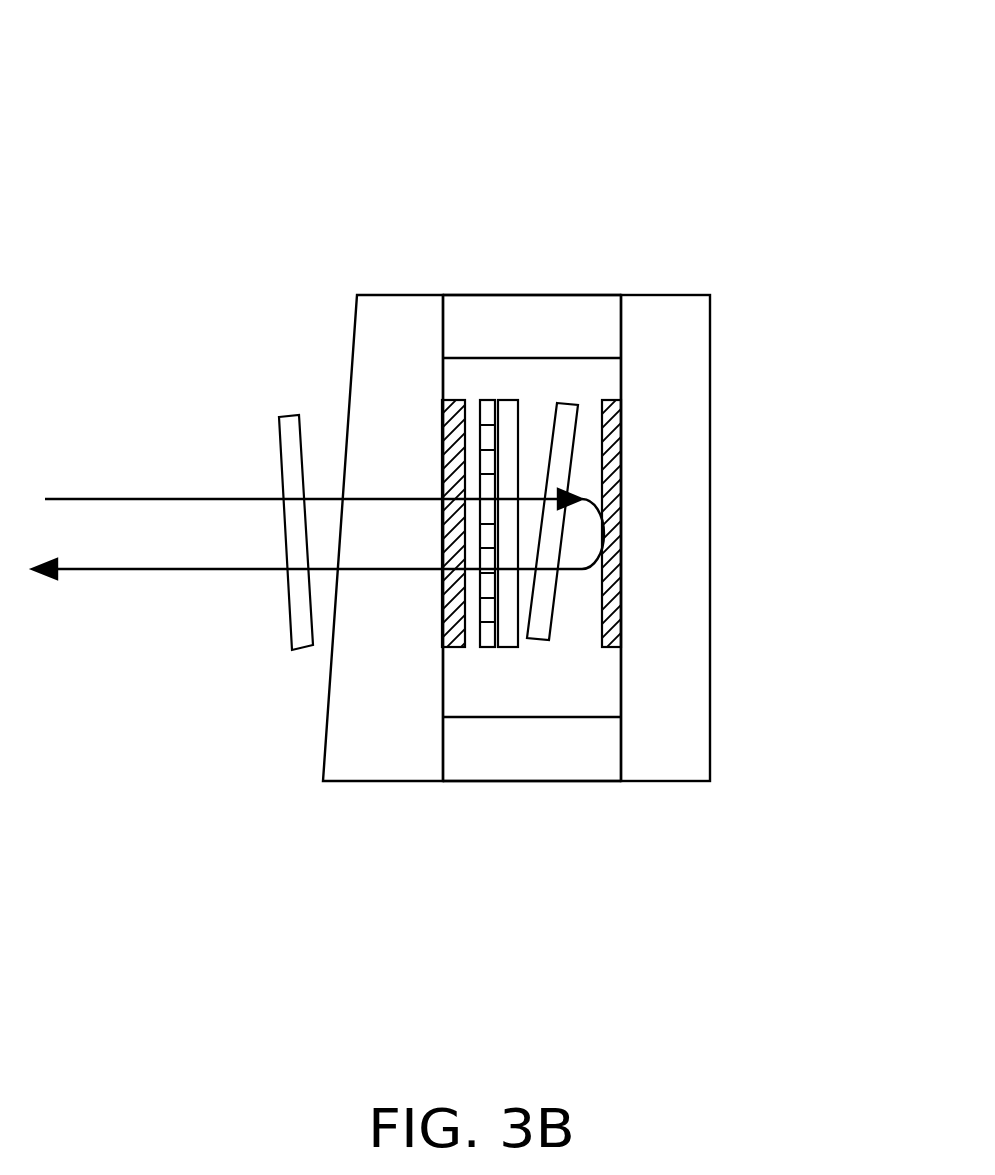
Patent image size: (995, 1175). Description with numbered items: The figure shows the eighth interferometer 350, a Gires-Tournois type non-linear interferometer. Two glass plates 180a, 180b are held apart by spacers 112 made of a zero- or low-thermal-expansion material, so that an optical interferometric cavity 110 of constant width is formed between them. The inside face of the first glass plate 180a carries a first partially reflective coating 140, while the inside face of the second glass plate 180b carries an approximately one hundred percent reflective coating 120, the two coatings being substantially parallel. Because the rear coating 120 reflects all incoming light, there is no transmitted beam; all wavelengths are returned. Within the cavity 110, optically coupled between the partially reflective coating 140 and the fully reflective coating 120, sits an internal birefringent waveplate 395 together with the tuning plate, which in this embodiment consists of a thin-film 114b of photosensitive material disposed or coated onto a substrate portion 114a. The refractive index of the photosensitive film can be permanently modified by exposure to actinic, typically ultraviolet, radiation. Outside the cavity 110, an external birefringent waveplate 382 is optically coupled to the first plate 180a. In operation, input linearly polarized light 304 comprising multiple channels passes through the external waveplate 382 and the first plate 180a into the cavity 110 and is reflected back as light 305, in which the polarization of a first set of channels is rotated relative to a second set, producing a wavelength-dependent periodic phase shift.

The eighth interferometer 350 is at (372, 52).
The optical interferometric cavity 110 is at (532, 621).
The spacers 112 is at (462, 295).
The first glass plate 180a is at (357, 295).
The second glass plate 180b is at (710, 295).
The first partially reflective coating 140 is at (434, 641).
The substrate portion 114a is at (500, 412).
The thin-film of photosensitive material 114b is at (482, 650).
The internal birefringent waveplate 395 is at (554, 385).
The approximately 100% reflective coating 120 is at (626, 412).
The external birefringent waveplate 382 is at (280, 418).
The input linearly polarized light 304 is at (132, 497).
The reflected light 305 is at (72, 570).